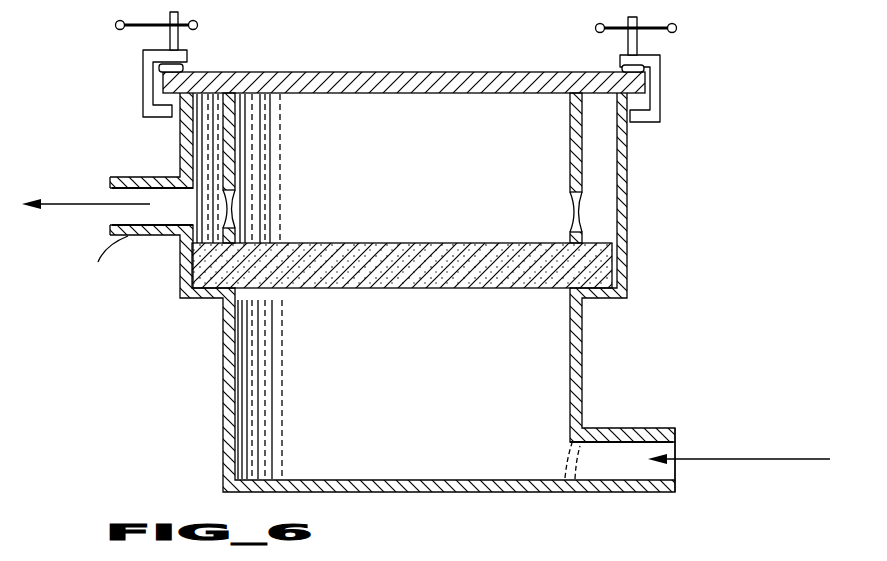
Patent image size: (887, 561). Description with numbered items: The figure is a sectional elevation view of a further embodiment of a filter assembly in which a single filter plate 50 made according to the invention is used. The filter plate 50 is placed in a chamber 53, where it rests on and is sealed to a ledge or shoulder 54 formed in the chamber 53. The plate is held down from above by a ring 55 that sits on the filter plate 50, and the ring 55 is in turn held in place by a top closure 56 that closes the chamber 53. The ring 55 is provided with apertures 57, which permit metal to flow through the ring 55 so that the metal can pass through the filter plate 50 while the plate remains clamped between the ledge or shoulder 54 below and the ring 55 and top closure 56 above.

The filter plate 50 is at (420, 255).
The chamber 53 is at (426, 252).
The ledge or shoulder 54 is at (602, 299).
The ring 55 is at (572, 149).
The top closure 56 is at (430, 73).
The apertures 57 is at (234, 204).